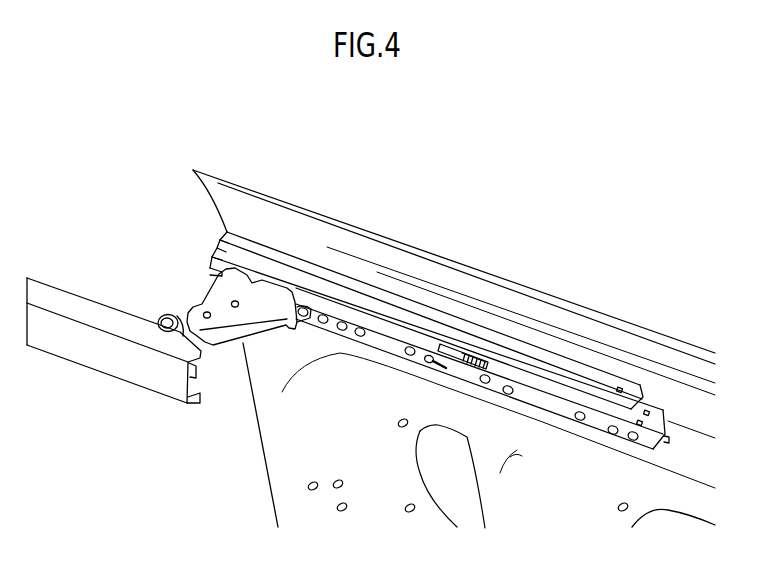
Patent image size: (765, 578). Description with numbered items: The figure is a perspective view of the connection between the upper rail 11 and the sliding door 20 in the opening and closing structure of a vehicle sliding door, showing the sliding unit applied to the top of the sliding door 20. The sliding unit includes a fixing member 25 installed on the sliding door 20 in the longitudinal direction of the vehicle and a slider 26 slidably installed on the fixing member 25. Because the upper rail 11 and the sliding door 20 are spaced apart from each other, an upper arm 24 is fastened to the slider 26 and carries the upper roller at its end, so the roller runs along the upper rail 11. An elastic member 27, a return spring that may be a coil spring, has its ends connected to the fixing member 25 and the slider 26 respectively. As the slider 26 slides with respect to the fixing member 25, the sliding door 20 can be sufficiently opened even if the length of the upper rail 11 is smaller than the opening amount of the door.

The upper rail 11 is at (85, 307).
The sliding door 20 is at (653, 383).
The upper arm 24 is at (205, 302).
The fixing member 25 is at (452, 327).
The slider 26 is at (387, 335).
The elastic member 27 is at (467, 352).